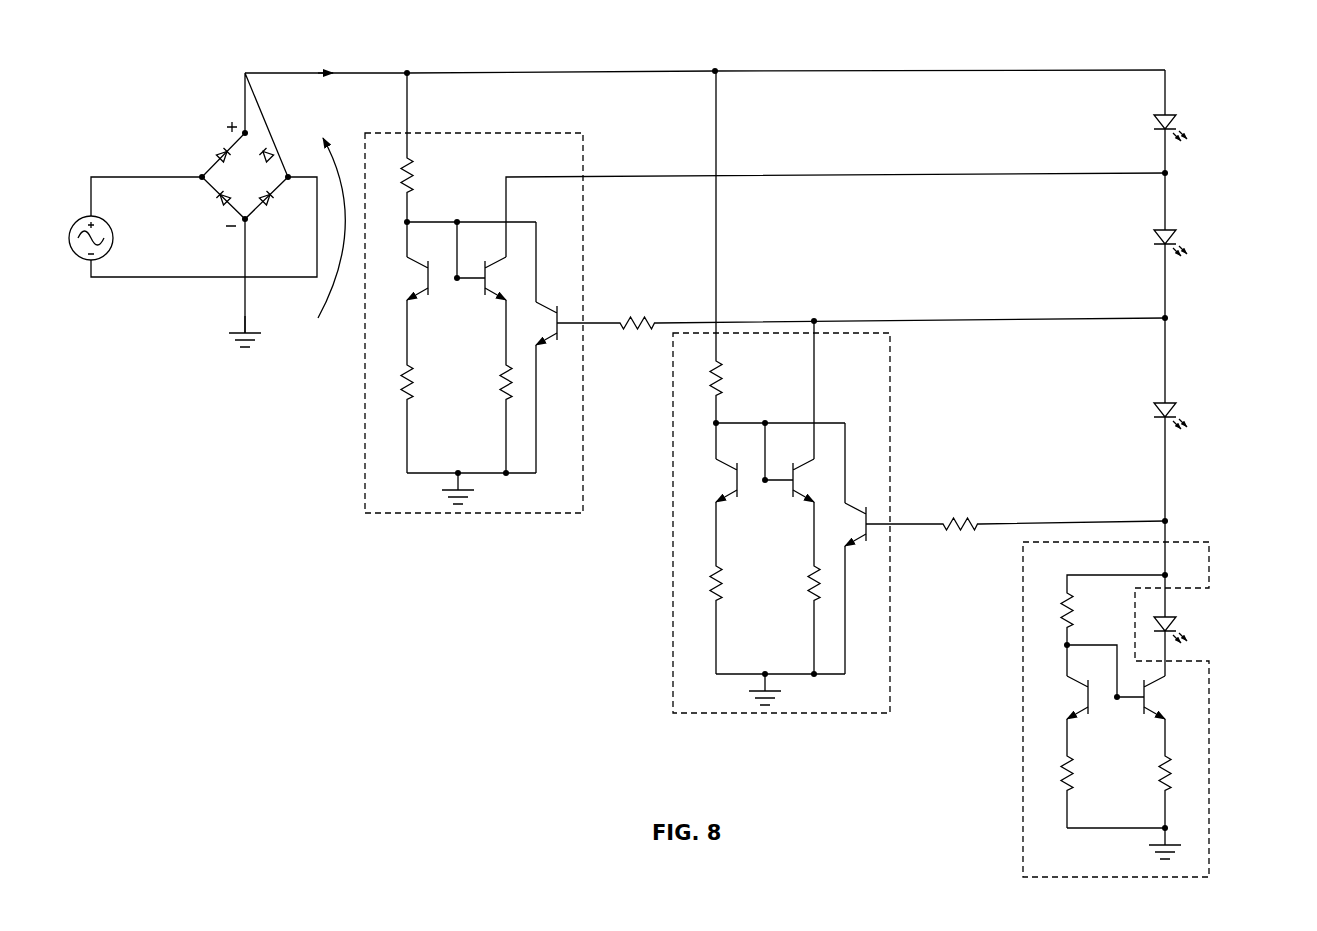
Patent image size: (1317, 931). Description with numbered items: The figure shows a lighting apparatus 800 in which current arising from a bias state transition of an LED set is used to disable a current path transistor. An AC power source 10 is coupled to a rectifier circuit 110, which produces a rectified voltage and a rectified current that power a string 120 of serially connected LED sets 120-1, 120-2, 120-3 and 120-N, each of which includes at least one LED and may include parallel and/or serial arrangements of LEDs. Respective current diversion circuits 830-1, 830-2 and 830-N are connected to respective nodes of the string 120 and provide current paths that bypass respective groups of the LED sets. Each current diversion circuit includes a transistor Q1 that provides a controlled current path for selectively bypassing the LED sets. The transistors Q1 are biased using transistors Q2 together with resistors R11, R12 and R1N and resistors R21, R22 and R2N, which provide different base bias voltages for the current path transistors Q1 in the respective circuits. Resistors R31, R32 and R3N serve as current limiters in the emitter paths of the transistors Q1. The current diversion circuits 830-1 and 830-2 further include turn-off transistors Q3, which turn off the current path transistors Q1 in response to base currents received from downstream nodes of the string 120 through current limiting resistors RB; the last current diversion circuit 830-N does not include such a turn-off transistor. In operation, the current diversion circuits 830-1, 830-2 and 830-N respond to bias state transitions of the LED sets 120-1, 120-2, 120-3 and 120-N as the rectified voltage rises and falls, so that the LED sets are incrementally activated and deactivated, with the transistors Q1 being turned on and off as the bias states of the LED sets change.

The lighting apparatus 800 is at (201, 63).
The AC power source 10 is at (78, 256).
The rectifier circuit 110 is at (208, 136).
The string 120 is at (1174, 77).
The LED set 120-1 is at (1190, 117).
The LED set 120-2 is at (1190, 235).
The LED set 120-3 is at (1190, 405).
The LED set 120-N is at (1190, 620).
The current diversion circuit 830-1 is at (484, 132).
The current diversion circuit 830-2 is at (891, 381).
The current diversion circuit 830-N is at (1190, 542).
The resistor R11 is at (432, 147).
The resistor R21 is at (432, 386).
The resistor R31 is at (497, 383).
The resistor R12 is at (740, 247).
The resistor R22 is at (741, 588).
The resistor R32 is at (805, 585).
The resistor R1N is at (1113, 625).
The resistor R2N is at (1092, 773).
The resistor R3N is at (1155, 778).
The current limiting resistor RB is at (861, 409).
The transistor Q1 is at (838, 488).
The transistor Q2 is at (731, 488).
The turn-off transistor Q3 is at (709, 412).